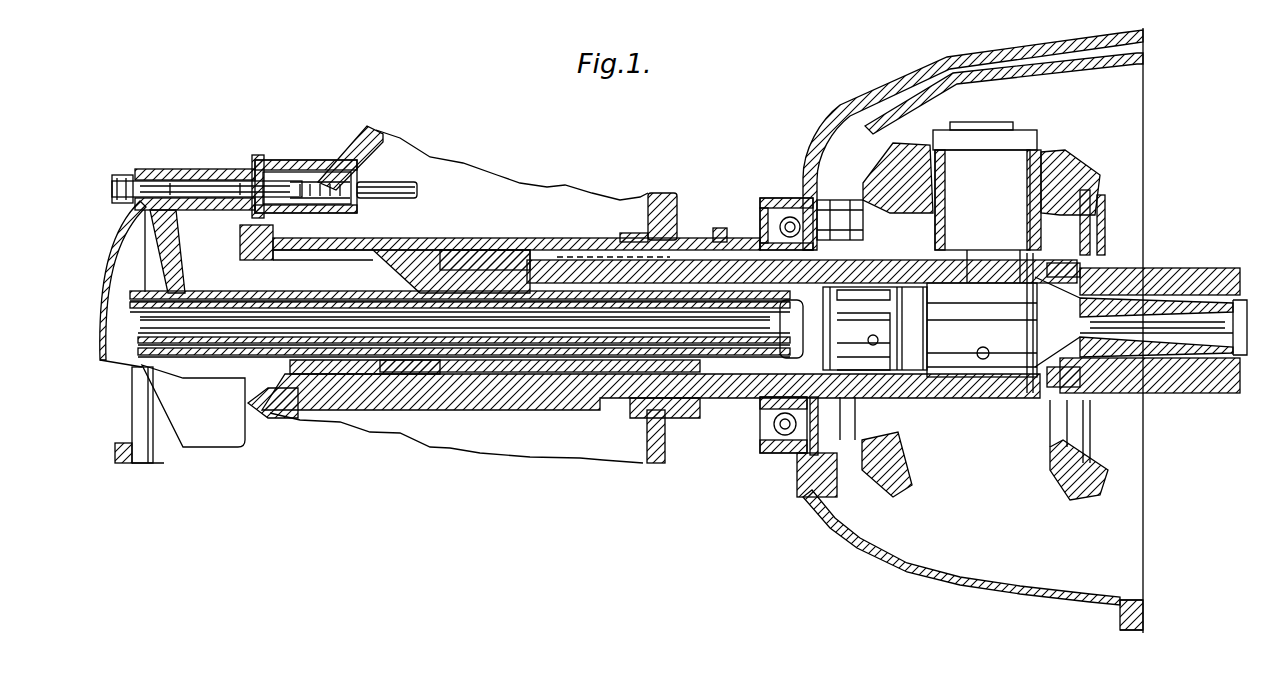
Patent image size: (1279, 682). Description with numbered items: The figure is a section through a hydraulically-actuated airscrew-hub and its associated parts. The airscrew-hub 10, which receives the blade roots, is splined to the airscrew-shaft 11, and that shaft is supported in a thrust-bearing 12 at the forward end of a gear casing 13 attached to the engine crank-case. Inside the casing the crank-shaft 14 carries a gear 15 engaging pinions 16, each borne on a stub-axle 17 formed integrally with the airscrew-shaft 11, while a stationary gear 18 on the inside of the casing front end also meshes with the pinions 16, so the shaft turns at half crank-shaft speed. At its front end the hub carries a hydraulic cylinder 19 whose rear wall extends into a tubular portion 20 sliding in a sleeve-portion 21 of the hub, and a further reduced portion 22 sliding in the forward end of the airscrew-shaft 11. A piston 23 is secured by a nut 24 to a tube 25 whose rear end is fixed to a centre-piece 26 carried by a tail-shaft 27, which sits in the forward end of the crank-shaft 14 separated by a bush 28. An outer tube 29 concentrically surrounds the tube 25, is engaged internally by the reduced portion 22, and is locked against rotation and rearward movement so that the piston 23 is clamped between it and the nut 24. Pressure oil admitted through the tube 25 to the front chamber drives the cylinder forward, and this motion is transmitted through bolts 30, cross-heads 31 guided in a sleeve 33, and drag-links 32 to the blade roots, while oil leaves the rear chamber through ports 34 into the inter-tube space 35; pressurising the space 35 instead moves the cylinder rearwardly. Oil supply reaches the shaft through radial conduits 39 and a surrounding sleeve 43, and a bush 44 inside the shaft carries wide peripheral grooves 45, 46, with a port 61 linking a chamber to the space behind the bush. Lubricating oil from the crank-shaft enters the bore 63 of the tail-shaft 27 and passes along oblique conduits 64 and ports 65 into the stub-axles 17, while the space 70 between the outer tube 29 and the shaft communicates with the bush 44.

The airscrew-hub 10 is at (350, 136).
The airscrew-shaft 11 is at (690, 273).
The thrust-bearing 12 is at (786, 220).
The gear casing 13 is at (883, 545).
The crank-shaft 14 is at (1173, 270).
The gear 15 is at (1080, 182).
The pinions 16 is at (1077, 157).
The stub-axle 17 is at (1035, 160).
The stationary gear 18 is at (877, 172).
The hydraulic cylinder 19 is at (104, 362).
The tubular portion 20 is at (330, 392).
The sleeve-portion 21 is at (382, 392).
The reduced portion 22 is at (470, 360).
The piston 23 is at (174, 250).
The nut 24 is at (150, 368).
The tube 25 is at (284, 345).
The centre-piece 26 is at (977, 293).
The tail-shaft 27 is at (1174, 394).
The bush 28 is at (1187, 395).
The outer tube 29 is at (550, 362).
The bolts 30 is at (178, 186).
The cross-heads 31 is at (318, 185).
The drag-links 32 is at (395, 198).
The sleeve 33 is at (265, 168).
The ports 34 is at (206, 290).
The inter-tube space 35 is at (332, 298).
The radial conduits 39 is at (776, 210).
The sleeve 43 is at (805, 490).
The bush 44 is at (876, 371).
The groove 45 is at (900, 295).
The groove 46 is at (877, 372).
The port 61 is at (878, 339).
The bore 63 is at (1208, 330).
The oblique conduits 64 is at (987, 349).
The ports 65 is at (990, 362).
The space 70 is at (683, 365).